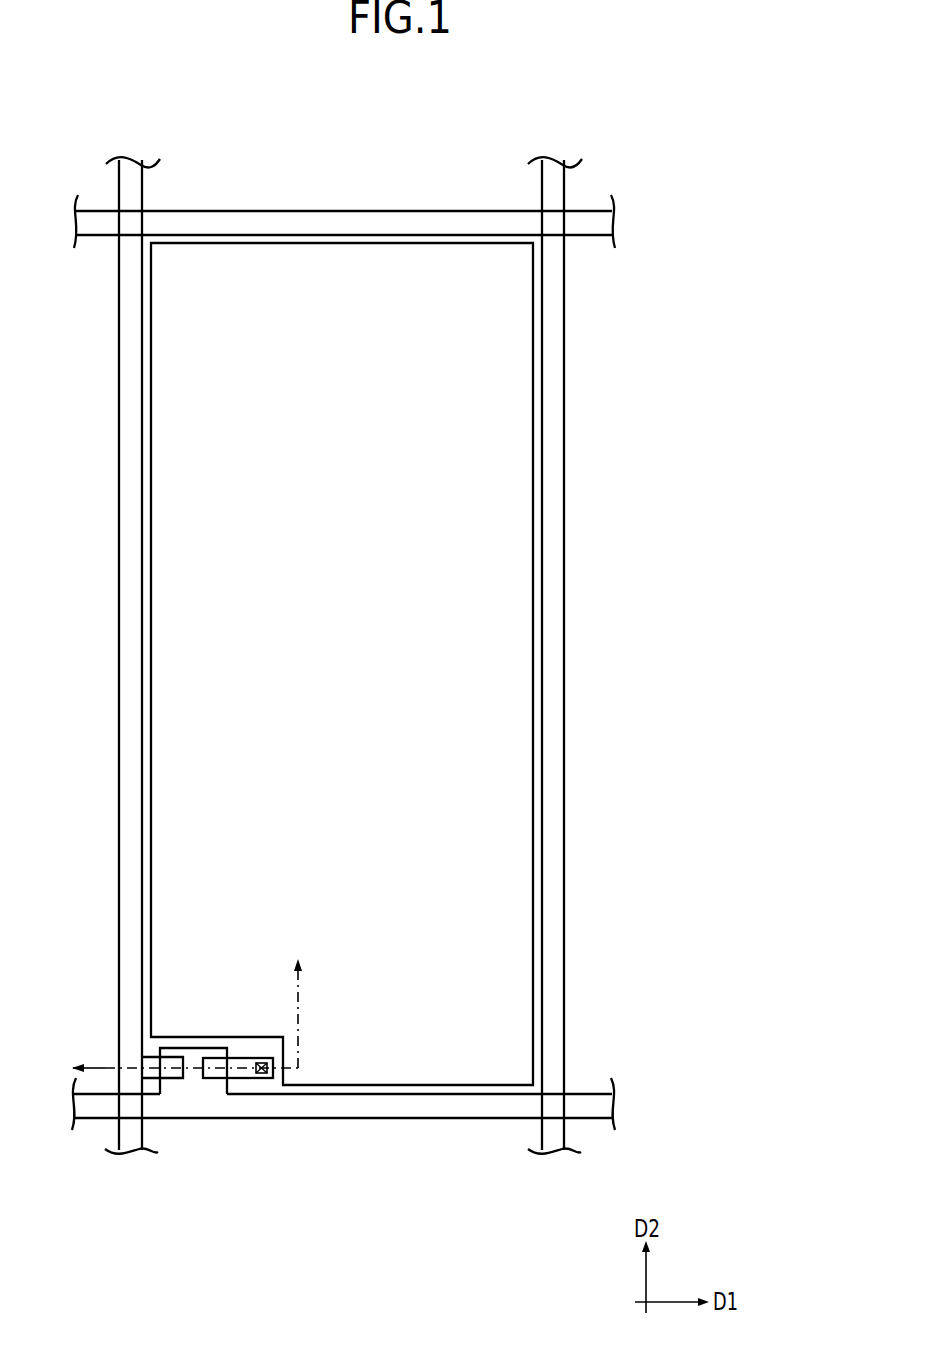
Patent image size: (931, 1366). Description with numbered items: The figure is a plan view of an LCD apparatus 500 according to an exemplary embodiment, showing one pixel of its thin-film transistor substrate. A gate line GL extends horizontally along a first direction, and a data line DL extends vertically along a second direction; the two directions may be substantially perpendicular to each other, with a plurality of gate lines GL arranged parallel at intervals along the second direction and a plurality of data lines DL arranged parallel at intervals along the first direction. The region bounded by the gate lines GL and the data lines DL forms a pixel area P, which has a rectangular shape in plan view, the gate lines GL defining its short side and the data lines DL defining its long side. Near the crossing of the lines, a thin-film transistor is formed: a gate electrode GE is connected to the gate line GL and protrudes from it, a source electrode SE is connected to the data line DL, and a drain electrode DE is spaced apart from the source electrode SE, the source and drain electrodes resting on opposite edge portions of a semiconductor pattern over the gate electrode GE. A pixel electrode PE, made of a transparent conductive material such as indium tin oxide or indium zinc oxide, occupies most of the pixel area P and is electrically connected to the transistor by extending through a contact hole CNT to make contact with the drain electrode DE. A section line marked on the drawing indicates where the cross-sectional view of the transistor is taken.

The LCD apparatus 500 is at (368, 101).
The pixel area P is at (349, 457).
The pixel electrode PE is at (498, 793).
The gate line GL is at (612, 1108).
The data line DL is at (547, 1153).
The source electrode SE is at (168, 1080).
The gate electrode GE is at (190, 1068).
The drain electrode DE is at (233, 1075).
The contact hole CNT is at (262, 1076).